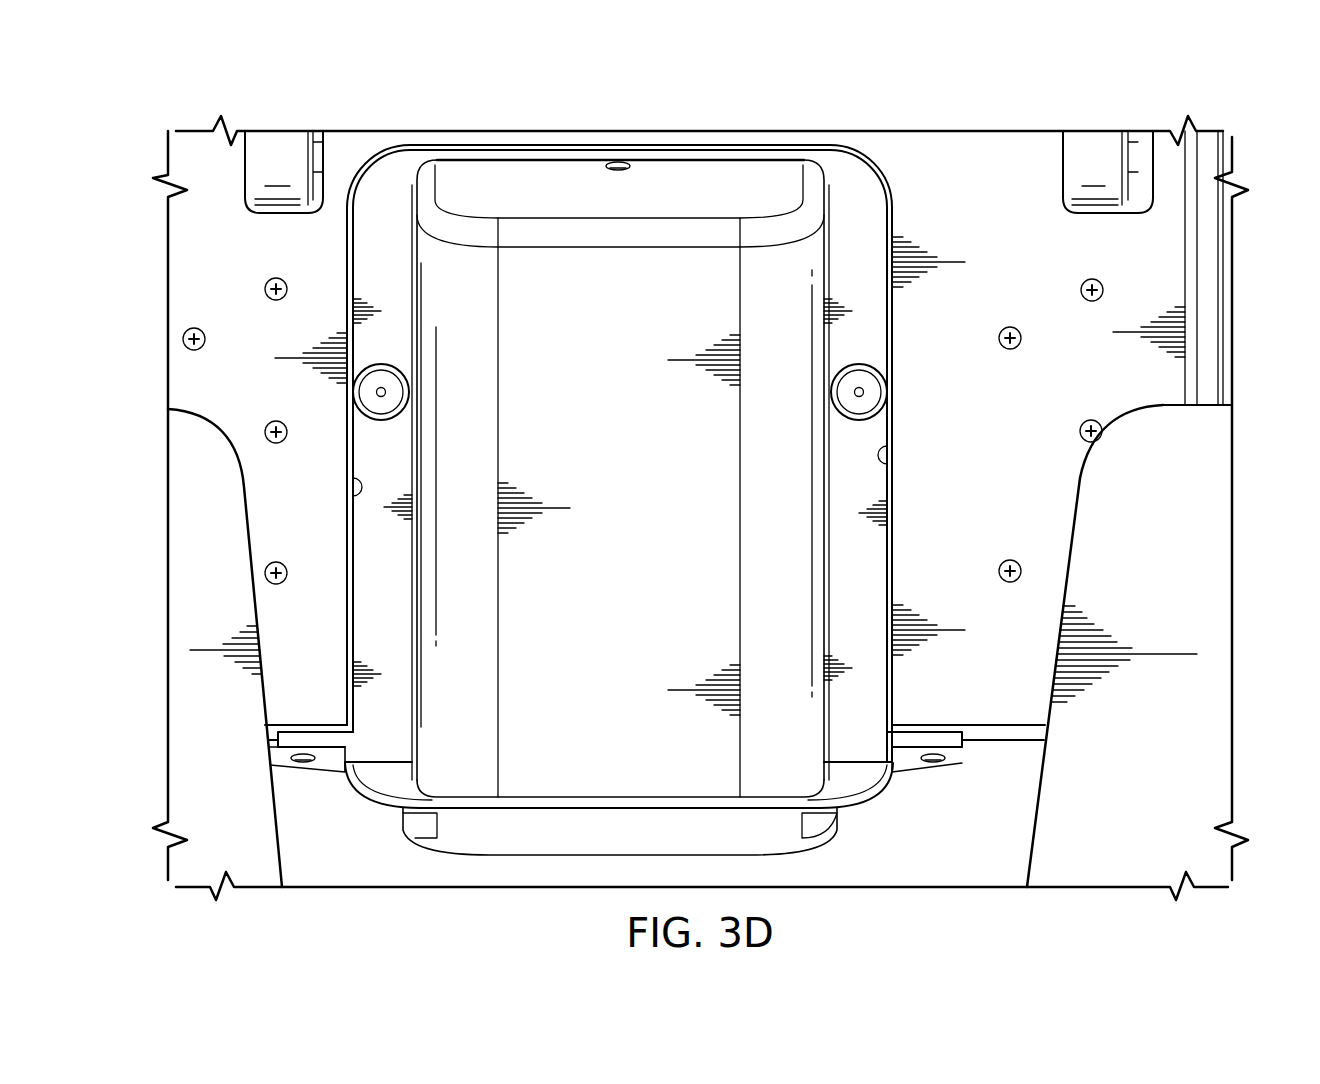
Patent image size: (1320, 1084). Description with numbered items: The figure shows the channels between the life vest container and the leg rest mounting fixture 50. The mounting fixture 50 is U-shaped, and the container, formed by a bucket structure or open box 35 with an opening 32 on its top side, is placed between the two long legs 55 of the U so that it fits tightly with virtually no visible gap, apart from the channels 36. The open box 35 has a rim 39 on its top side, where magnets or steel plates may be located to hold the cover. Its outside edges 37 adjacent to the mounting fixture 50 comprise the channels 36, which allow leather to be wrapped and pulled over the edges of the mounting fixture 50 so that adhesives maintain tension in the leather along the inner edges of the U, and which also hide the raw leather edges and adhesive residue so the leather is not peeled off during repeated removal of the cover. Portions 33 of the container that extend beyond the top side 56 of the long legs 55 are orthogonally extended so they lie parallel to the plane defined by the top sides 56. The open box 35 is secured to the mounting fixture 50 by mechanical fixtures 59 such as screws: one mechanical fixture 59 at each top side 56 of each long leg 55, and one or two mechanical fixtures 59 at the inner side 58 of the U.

The opening 32 is at (557, 274).
The portions of the container 33 is at (333, 770).
The bucket structure or open box 35 is at (545, 858).
The channels 36 is at (378, 158).
The edges 37 is at (353, 478).
The rim 39 is at (365, 255).
The mounting fixture 50 is at (503, 118).
The long legs 55 is at (190, 265).
The top side 56 is at (1030, 740).
The inner side 58 is at (727, 155).
The mechanical fixtures 59 is at (622, 172).